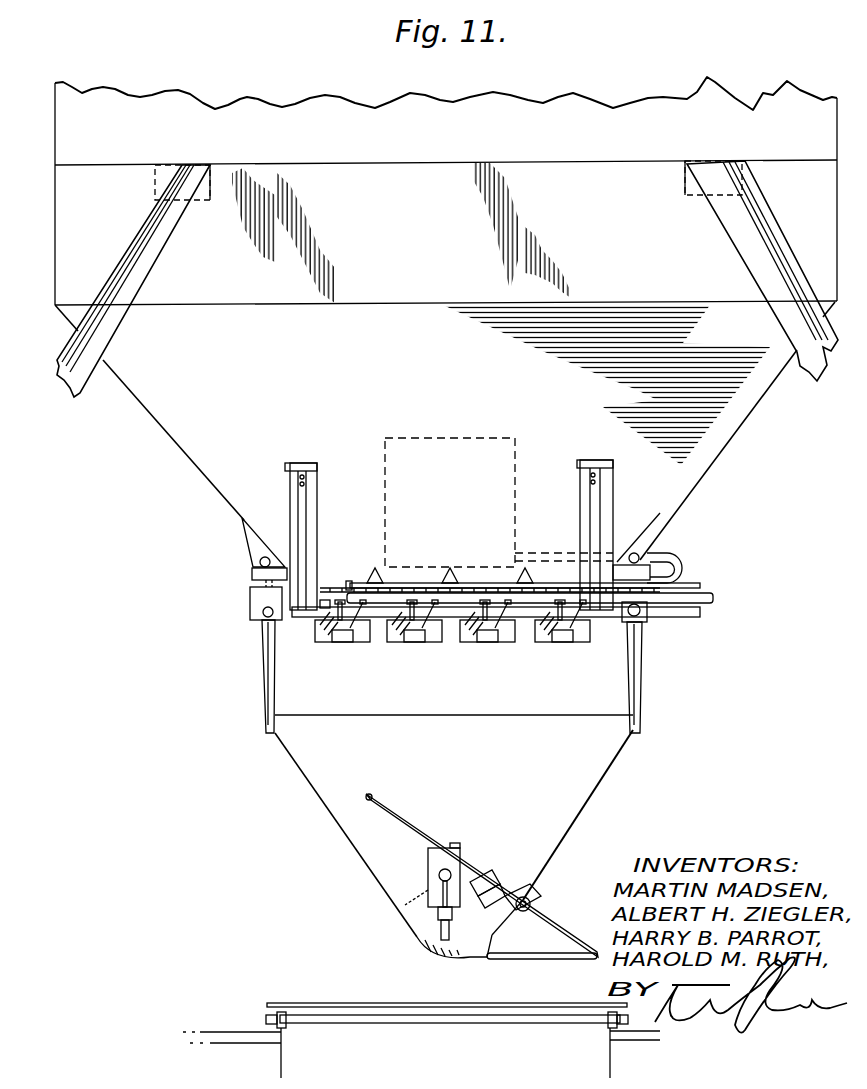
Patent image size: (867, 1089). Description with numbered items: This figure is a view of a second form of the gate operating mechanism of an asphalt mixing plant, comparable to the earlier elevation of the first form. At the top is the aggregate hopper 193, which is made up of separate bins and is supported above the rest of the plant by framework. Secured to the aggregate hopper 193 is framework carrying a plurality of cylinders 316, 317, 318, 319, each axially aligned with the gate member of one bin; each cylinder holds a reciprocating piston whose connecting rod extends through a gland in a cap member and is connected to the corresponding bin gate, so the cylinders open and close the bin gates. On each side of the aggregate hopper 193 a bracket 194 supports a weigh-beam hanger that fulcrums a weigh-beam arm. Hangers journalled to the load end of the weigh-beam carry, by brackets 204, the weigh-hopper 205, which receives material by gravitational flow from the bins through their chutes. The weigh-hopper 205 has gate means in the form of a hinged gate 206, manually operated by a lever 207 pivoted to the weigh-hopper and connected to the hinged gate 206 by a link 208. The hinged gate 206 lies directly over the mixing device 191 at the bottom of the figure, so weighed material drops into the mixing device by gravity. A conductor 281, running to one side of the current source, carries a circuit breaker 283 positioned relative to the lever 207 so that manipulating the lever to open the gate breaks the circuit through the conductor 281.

The mixing device 191 is at (337, 1013).
The aggregate hopper 193 is at (215, 432).
The bracket 194 is at (258, 548).
The brackets 204 is at (643, 680).
The weigh-hopper 205 is at (330, 797).
The hinged gate 206 is at (433, 953).
The lever 207 is at (398, 820).
The link 208 is at (556, 957).
The conductor 281 is at (477, 889).
The circuit breaker 283 is at (531, 901).
The cylinder 316 is at (338, 648).
The cylinder 317 is at (414, 648).
The cylinder 318 is at (486, 648).
The cylinder 319 is at (561, 648).